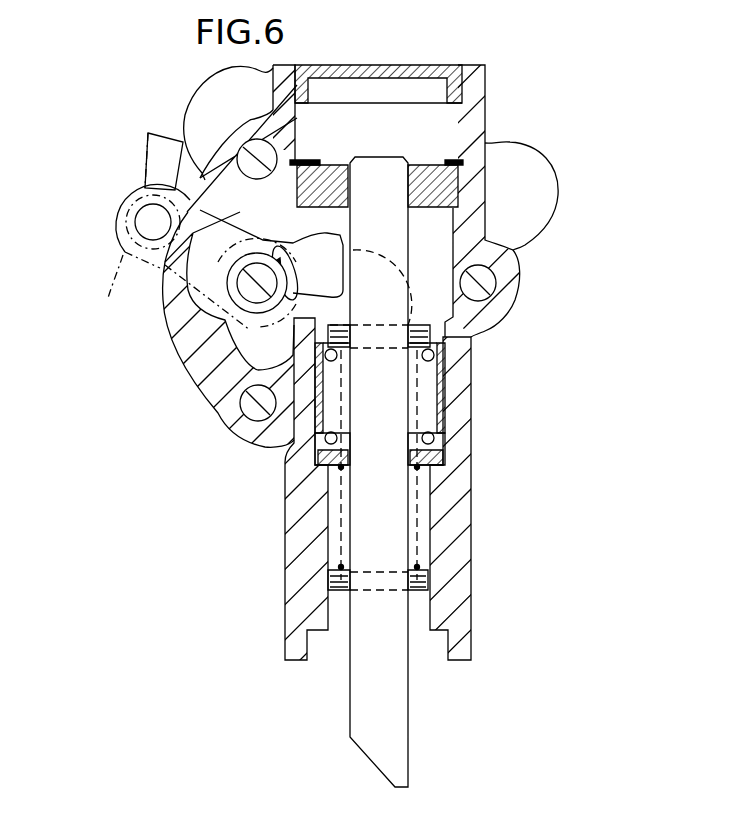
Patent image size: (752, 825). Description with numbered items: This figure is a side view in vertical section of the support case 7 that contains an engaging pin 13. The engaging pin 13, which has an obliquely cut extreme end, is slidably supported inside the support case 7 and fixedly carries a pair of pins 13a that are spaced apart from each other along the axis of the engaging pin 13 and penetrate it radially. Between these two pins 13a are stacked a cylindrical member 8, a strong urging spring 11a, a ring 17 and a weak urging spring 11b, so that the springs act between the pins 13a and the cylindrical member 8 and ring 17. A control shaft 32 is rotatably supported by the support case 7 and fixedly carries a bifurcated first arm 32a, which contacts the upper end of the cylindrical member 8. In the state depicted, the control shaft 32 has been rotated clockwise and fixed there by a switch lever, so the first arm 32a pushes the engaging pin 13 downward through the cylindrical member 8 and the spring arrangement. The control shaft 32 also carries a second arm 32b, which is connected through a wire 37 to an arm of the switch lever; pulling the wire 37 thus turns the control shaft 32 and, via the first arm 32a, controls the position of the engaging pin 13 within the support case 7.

The support case 7 is at (474, 512).
The cylindrical member 8 is at (440, 405).
The strong urging spring 11a is at (288, 465).
The weak urging spring 11b is at (430, 572).
The engaging pin 13 is at (408, 693).
The pins 13a is at (410, 333).
The ring 17 is at (447, 458).
The control shaft 32 is at (200, 373).
The first arm 32a is at (342, 232).
The second arm 32b is at (165, 259).
The wire 37 is at (140, 148).